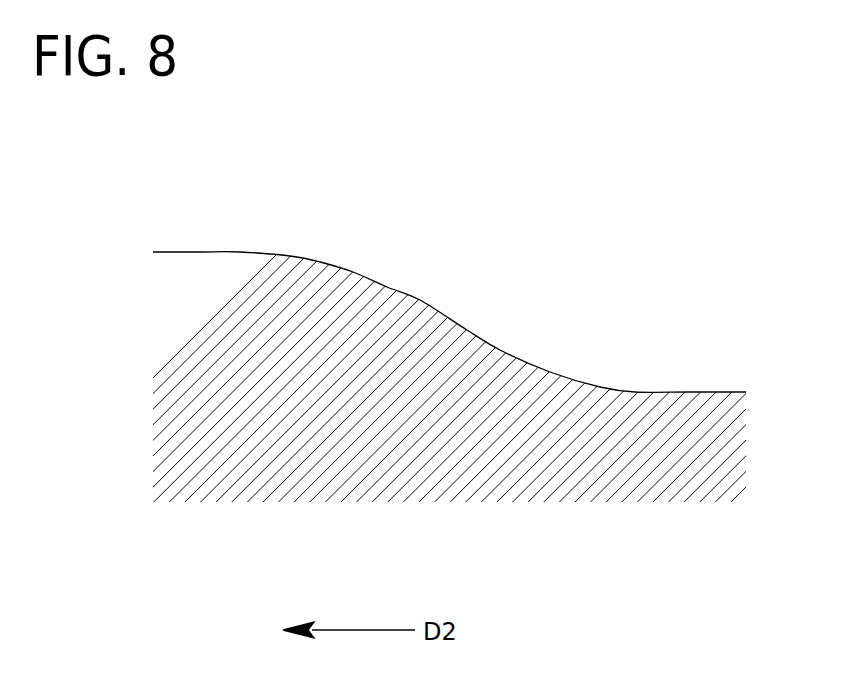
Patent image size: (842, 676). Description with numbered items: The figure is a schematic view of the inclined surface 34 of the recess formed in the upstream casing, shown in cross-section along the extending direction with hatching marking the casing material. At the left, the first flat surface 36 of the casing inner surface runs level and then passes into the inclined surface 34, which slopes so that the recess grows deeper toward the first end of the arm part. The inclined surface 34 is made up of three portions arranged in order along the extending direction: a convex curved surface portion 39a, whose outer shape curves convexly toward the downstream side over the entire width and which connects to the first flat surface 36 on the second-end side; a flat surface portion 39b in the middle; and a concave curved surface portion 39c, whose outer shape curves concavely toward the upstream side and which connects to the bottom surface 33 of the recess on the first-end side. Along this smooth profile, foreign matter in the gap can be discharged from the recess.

The first flat surface 36 is at (180, 252).
The inclined surface 34 is at (501, 242).
The convex curved surface portion 39a is at (370, 280).
The flat surface portion 39b is at (433, 312).
The concave curved surface portion 39c is at (576, 311).
The bottom surface 33 is at (707, 392).